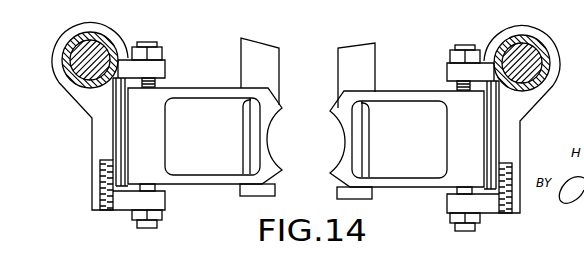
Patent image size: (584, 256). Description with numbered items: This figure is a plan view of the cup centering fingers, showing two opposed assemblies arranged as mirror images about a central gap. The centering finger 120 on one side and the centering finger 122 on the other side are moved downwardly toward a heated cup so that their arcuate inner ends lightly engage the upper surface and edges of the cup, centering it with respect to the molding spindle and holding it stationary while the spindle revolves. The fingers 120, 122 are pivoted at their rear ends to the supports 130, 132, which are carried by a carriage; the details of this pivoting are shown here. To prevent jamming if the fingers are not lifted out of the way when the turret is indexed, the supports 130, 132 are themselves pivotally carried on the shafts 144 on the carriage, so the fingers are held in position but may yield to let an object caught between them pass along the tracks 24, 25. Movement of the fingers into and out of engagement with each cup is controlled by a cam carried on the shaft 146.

The support 130 is at (78, 83).
The shaft 144 is at (90, 60).
The centering finger 120 is at (227, 77).
The track 25 is at (258, 48).
The support 132 is at (544, 87).
The shaft 146 is at (524, 62).
The centering finger 122 is at (420, 83).
The track 24 is at (388, 29).